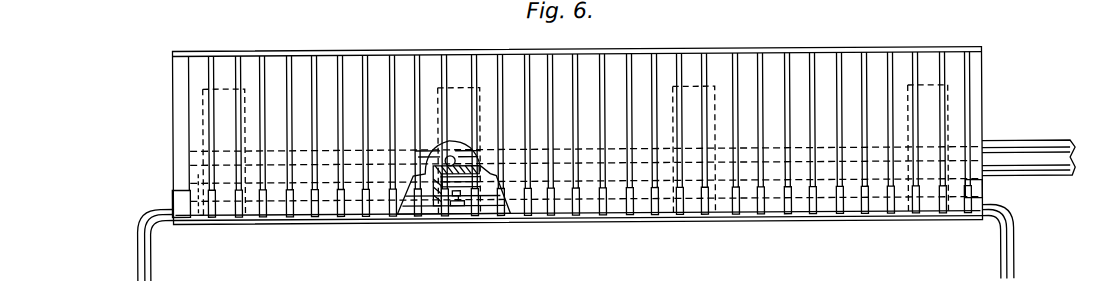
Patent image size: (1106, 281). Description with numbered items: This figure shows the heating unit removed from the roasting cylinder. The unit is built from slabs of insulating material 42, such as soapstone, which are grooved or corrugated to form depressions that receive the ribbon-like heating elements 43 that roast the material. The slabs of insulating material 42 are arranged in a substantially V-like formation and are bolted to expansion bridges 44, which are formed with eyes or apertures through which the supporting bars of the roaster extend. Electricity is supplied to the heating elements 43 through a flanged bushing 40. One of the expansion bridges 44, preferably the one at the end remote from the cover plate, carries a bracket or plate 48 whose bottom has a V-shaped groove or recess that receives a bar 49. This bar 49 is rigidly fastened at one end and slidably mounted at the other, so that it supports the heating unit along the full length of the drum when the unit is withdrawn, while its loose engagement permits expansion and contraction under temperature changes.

The flanged bushing 40 is at (207, 147).
The slabs of insulating material 42 is at (241, 55).
The ribbon-like heating elements 43 is at (375, 55).
The expansion bridges 44 is at (475, 196).
The bracket or plate 48 is at (434, 214).
The bar 49 is at (152, 249).